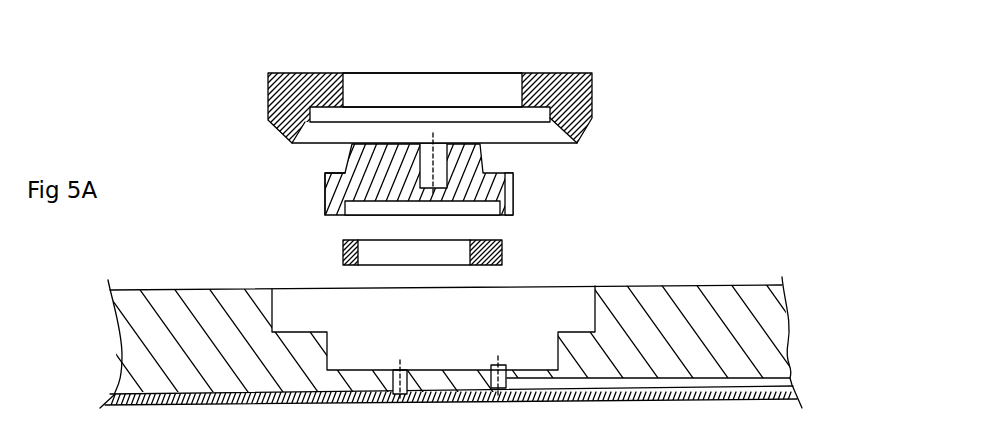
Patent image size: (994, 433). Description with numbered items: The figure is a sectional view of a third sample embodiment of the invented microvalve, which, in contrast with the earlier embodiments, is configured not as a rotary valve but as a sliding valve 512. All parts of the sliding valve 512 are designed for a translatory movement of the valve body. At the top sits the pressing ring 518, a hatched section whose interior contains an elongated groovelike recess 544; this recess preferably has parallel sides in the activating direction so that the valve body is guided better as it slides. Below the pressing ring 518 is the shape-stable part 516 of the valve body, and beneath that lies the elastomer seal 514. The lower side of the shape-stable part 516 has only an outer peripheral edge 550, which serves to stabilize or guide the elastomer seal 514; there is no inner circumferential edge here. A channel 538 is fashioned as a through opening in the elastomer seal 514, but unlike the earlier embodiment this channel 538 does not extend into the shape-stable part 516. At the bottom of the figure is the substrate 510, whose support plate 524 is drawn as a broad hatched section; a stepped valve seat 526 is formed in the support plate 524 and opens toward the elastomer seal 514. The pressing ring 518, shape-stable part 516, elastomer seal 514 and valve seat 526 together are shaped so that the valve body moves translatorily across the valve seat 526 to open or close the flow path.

The substrate 510 is at (793, 268).
The sliding valve 512 is at (713, 93).
The elastomer seal 514 is at (503, 246).
The shape-stable part 516 is at (517, 187).
The pressing ring 518 is at (593, 78).
The support plate 524 is at (777, 323).
The valve seat 526 is at (567, 297).
The channel 538 is at (448, 249).
The elongated groovelike recess 544 is at (476, 86).
The outer peripheral edge 550 is at (326, 214).